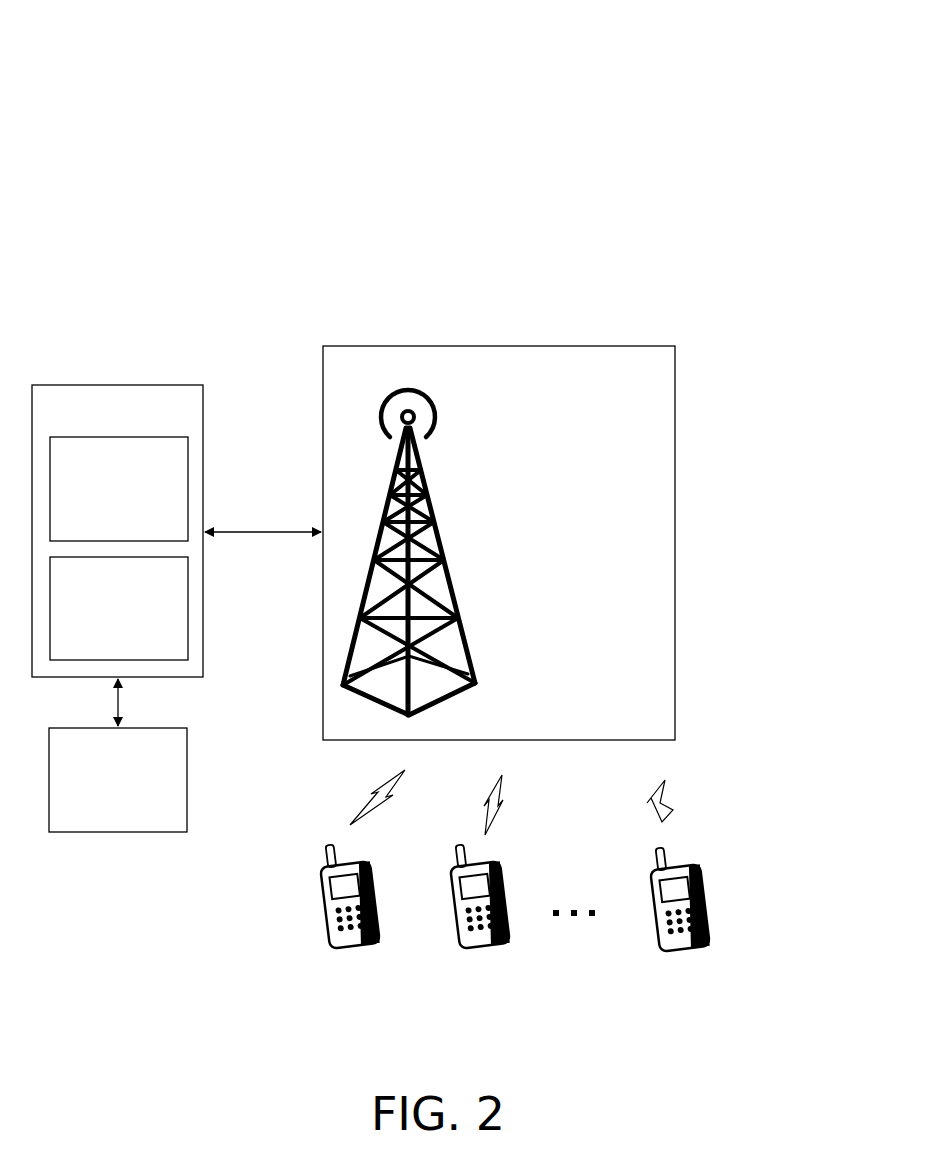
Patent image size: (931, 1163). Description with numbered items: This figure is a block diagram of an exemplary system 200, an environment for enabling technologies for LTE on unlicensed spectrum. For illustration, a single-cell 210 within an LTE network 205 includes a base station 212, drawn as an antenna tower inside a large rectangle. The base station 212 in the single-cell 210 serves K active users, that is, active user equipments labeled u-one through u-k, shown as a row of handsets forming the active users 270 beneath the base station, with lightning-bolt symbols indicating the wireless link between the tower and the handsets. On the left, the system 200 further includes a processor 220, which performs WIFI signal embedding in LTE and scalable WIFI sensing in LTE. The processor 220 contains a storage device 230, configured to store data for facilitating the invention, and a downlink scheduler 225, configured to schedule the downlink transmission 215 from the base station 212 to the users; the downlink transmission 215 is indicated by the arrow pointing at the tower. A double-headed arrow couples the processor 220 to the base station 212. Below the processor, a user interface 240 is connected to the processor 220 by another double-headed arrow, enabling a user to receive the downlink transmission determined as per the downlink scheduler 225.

The system 200 is at (181, 38).
The LTE network 205 is at (226, 83).
The single-cell 210 is at (271, 128).
The base station 212 is at (323, 346).
The downlink transmission 215 is at (430, 481).
The processor 220 is at (117, 531).
The downlink scheduler 225 is at (119, 489).
The storage device 230 is at (119, 608).
The user interface 240 is at (118, 780).
The active users 270 is at (750, 906).